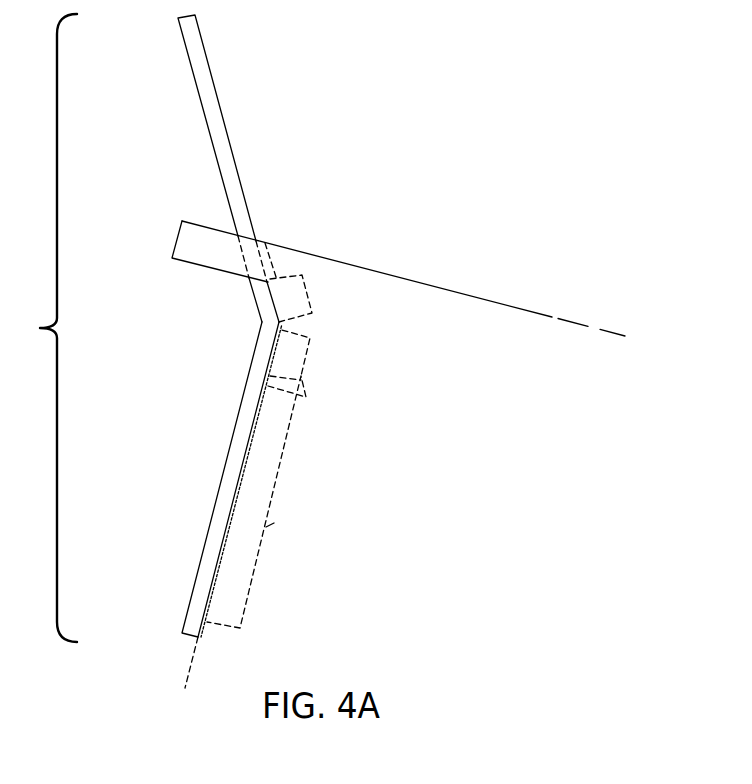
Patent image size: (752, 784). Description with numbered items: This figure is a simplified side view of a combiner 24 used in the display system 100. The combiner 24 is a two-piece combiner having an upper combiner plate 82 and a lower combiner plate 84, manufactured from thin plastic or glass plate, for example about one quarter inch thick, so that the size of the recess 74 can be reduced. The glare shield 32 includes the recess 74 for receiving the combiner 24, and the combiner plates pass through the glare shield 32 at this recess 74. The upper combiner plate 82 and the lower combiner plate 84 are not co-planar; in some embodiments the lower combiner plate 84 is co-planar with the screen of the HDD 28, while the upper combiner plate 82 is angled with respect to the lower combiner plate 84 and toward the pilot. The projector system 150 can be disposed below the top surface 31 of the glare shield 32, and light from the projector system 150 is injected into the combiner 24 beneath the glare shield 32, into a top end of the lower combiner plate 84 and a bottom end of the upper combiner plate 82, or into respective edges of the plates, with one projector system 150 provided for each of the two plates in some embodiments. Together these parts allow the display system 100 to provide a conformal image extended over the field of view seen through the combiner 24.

The combiner 24 is at (45, 328).
The HDD 28 is at (270, 525).
The top surface 31 is at (422, 282).
The glare shield 32 is at (184, 236).
The recess 74 is at (263, 240).
The upper combiner plate 82 is at (217, 136).
The lower combiner plate 84 is at (213, 548).
The display system 100 is at (431, 125).
The projector system 150 is at (303, 288).